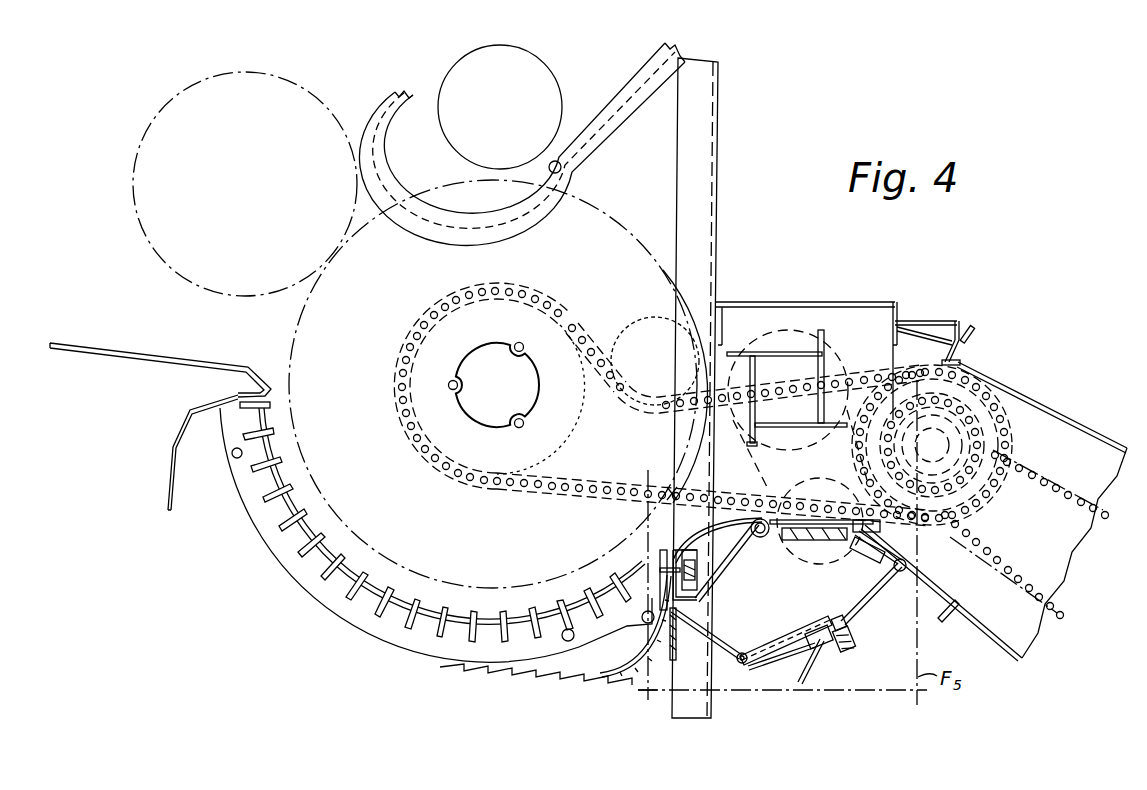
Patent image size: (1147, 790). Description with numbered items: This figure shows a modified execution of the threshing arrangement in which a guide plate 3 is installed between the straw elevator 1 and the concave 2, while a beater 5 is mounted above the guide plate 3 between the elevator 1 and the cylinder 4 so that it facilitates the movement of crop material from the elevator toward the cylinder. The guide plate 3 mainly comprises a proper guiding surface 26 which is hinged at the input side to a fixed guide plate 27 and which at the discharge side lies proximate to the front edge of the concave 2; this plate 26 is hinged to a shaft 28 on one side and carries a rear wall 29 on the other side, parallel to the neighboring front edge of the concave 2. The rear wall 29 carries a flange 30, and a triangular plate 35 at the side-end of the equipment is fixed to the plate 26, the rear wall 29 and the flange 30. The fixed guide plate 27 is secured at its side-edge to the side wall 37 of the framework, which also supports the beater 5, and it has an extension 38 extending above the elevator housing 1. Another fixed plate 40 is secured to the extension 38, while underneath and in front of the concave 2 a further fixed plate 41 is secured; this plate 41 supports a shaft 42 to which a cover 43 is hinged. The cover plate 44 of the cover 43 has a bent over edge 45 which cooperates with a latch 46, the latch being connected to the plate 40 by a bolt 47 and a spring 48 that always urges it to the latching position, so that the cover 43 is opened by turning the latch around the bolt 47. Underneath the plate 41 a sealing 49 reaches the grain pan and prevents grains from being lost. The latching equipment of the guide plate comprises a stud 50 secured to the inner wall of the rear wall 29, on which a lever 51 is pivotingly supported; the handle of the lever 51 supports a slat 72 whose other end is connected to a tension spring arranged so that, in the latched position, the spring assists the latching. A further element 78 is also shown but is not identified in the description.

The straw elevator 1 is at (1057, 398).
The concave 2 is at (279, 577).
The guide plate 3 is at (686, 519).
The cylinder 4 is at (293, 333).
The beater 5 is at (790, 362).
The guiding surface 26 is at (728, 520).
The fixed guide plate 27 is at (787, 517).
The shaft 28 is at (763, 539).
The rear wall 29 is at (661, 548).
The flange 30 is at (706, 610).
The triangular plate 35 is at (736, 562).
The side wall 37 is at (874, 587).
The extension 38 is at (907, 541).
The fixed plate 40 is at (860, 607).
The fixed plate 41 is at (702, 634).
The shaft 42 is at (740, 665).
The cover 43 is at (778, 656).
The cover plate 44 is at (776, 648).
The bent over edge 45 is at (826, 628).
The latch 46 is at (806, 683).
The bolt 47 is at (840, 616).
The spring 48 is at (852, 637).
The sealing 49 is at (617, 678).
The stud 50 is at (660, 566).
The lever 51 is at (700, 592).
The slat 72 is at (698, 568).
The shelf plate 78 is at (612, 633).